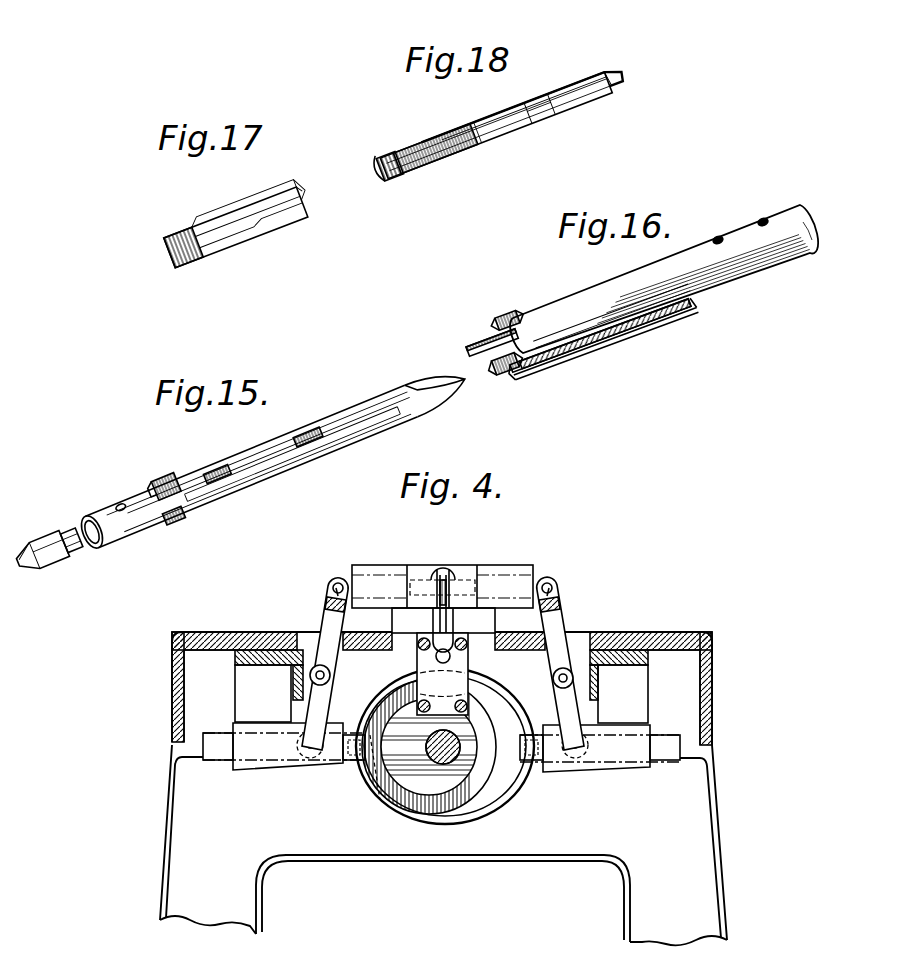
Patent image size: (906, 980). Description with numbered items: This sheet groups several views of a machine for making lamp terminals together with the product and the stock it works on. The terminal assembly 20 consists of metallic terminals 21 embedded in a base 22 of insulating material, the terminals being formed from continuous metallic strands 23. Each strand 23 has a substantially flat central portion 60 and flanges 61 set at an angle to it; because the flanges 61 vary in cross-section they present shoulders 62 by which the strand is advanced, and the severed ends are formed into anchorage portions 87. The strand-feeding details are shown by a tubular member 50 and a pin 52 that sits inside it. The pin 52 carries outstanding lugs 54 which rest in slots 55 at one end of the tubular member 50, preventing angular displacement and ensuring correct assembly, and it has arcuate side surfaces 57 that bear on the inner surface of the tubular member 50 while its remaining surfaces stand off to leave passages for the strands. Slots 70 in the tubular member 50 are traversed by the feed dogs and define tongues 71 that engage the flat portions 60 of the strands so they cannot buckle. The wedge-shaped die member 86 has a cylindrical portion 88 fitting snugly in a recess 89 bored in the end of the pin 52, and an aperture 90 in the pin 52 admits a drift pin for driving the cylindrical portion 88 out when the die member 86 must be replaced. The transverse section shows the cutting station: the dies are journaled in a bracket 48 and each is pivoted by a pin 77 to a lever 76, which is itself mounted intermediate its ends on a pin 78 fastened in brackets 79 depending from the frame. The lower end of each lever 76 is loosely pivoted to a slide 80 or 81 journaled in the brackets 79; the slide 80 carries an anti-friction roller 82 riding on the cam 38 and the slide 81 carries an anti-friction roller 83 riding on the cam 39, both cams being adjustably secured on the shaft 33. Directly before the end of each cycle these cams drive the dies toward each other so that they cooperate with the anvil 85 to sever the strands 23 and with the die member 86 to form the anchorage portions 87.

In FIG. 17, the terminal assembly 20 is at (229, 212).
In FIG. 17, the metallic terminals 21 is at (324, 207).
In FIG. 17, the base 22 is at (202, 268).
In FIG. 18, the metallic strands 23 is at (534, 137).
In FIG. 4, the shaft 33 is at (444, 764).
In FIG. 4, the cam 38 is at (408, 815).
In FIG. 4, the cam 39 is at (500, 805).
In FIG. 4, the bracket 48 is at (468, 565).
In FIG. 16, the tubular member 50 is at (566, 315).
In FIG. 15, the pin 52 is at (267, 440).
In FIG. 15, the lugs 54 is at (191, 501).
In FIG. 16, the slots 55 is at (513, 343).
In FIG. 15, the arcuate side surfaces 57 is at (279, 460).
In FIG. 18, the flat central portion 60 is at (506, 152).
In FIG. 18, the flanges 61 is at (555, 142).
In FIG. 18, the shoulders 62 is at (454, 126).
In FIG. 16, the slots 70 is at (608, 356).
In FIG. 16, the tongues 71 is at (561, 348).
In FIG. 4, the levers 76 is at (330, 614).
In FIG. 4, the pins 77 is at (330, 584).
In FIG. 4, the pins 78 is at (332, 676).
In FIG. 4, the brackets 79 is at (258, 690).
In FIG. 4, the slide 80 is at (352, 760).
In FIG. 4, the slide 81 is at (668, 760).
In FIG. 4, the anti-friction roller 82 is at (366, 760).
In FIG. 4, the anti-friction roller 83 is at (533, 760).
In FIG. 4, the anvil 85 is at (442, 570).
In FIG. 15, the wedge-shaped die member 86 is at (45, 581).
In FIG. 18, the anchorage portions 87 is at (380, 186).
In FIG. 15, the cylindrical portion 88 is at (88, 564).
In FIG. 15, the recess 89 is at (116, 549).
In FIG. 15, the aperture 90 is at (122, 482).